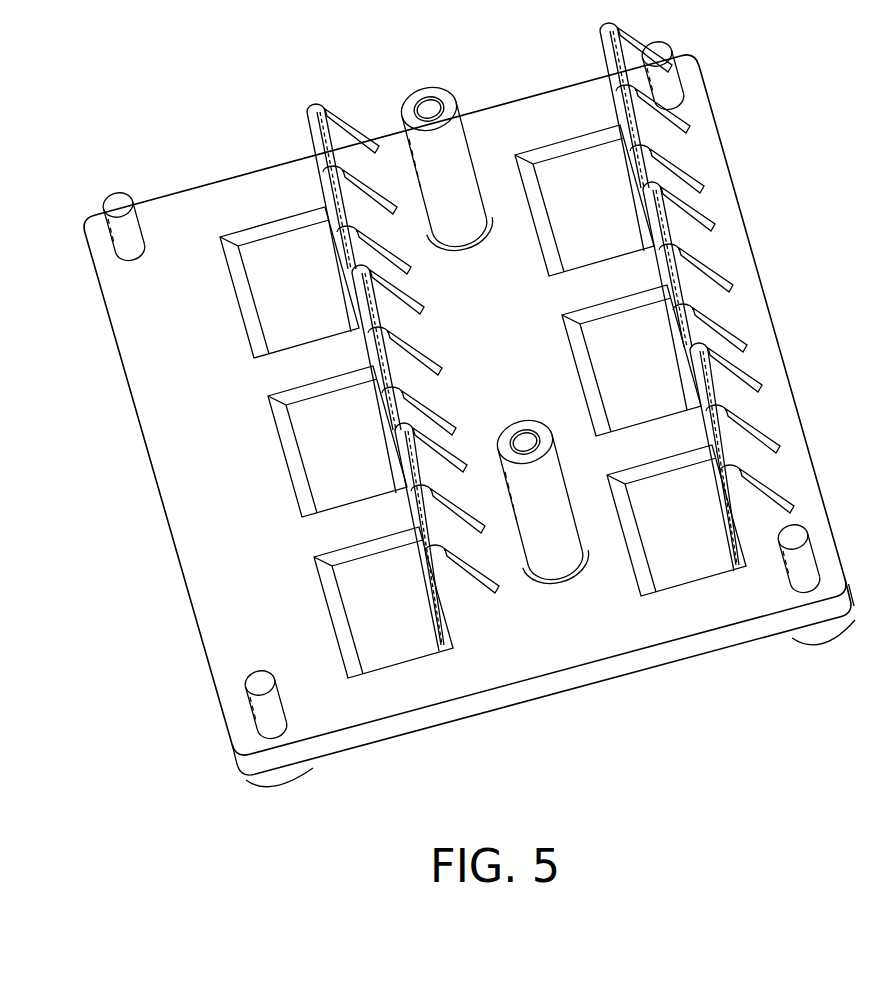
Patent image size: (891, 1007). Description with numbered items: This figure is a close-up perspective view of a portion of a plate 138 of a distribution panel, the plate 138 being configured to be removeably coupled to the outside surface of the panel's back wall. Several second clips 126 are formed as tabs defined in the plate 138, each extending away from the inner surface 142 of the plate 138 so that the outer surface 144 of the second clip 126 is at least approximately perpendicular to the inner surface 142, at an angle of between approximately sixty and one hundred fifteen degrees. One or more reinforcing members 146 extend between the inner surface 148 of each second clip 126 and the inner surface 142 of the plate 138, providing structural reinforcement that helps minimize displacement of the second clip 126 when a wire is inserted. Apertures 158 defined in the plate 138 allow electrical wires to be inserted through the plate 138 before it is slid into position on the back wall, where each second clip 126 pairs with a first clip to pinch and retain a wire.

The second clip 126 is at (603, 55).
The plate 138 is at (352, 748).
The inner surface of the plate 142 is at (180, 222).
The outer surface of the second clip 144 is at (313, 183).
The reinforcing members 146 is at (672, 112).
The inner surface of the second clip 148 is at (668, 72).
The aperture 158 is at (690, 543).